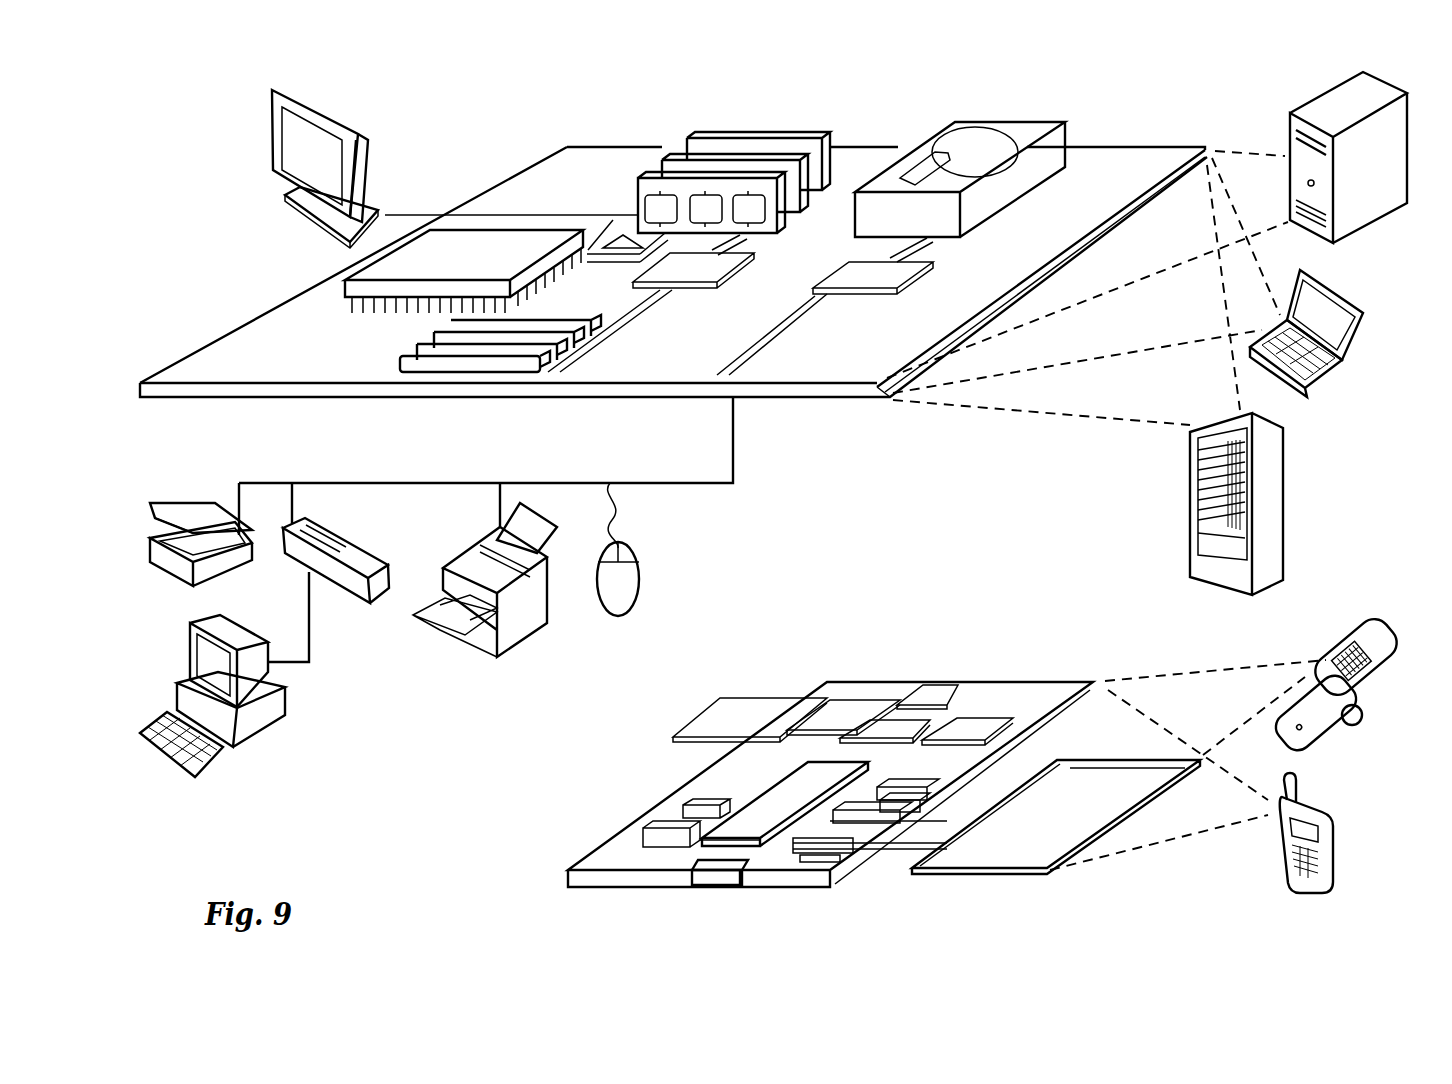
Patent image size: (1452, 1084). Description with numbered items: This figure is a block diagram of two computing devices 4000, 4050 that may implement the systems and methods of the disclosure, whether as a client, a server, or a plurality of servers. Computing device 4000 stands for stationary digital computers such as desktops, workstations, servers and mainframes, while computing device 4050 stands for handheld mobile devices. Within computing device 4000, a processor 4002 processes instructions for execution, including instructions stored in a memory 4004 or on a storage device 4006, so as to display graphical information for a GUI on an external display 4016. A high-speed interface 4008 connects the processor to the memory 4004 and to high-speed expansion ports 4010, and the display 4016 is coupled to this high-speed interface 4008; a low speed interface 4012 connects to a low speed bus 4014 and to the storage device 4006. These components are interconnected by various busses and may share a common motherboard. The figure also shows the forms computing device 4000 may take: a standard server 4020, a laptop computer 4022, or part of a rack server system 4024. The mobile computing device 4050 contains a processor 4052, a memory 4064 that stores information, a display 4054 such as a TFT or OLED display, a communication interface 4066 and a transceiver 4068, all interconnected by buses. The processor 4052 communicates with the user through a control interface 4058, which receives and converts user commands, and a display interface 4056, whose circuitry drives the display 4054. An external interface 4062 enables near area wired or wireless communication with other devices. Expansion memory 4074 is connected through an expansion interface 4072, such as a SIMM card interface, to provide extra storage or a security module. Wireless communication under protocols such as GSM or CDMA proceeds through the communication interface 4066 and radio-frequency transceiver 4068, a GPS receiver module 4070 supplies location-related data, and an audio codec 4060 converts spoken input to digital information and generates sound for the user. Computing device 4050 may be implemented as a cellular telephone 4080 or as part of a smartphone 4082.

The computing device 4000 is at (478, 114).
The processor 4002 is at (343, 285).
The memory 4004 is at (700, 137).
The storage device 4006 is at (965, 124).
The high-speed interface 4008 is at (610, 216).
The high-speed expansion ports 4010 is at (398, 358).
The low speed interface 4012 is at (852, 266).
The low speed bus 4014 is at (757, 396).
The display 4016 is at (283, 88).
The standard server 4020 is at (1289, 128).
The laptop computer 4022 is at (1362, 308).
The rack server system 4024 is at (1190, 530).
The computing device 4050 is at (545, 878).
The processor 4052 is at (747, 840).
The display 4054 is at (1013, 853).
The display interface 4056 is at (838, 862).
The control interface 4058 is at (873, 835).
The audio codec 4060 is at (893, 800).
The external interface 4062 is at (718, 888).
The memory 4064 is at (658, 830).
The communication interface 4066 is at (880, 722).
The transceiver 4068 is at (975, 716).
The GPS receiver module 4070 is at (940, 690).
The expansion interface 4072 is at (818, 716).
The expansion memory 4074 is at (728, 718).
The cellular telephone 4080 is at (1342, 632).
The smartphone 4082 is at (1286, 842).